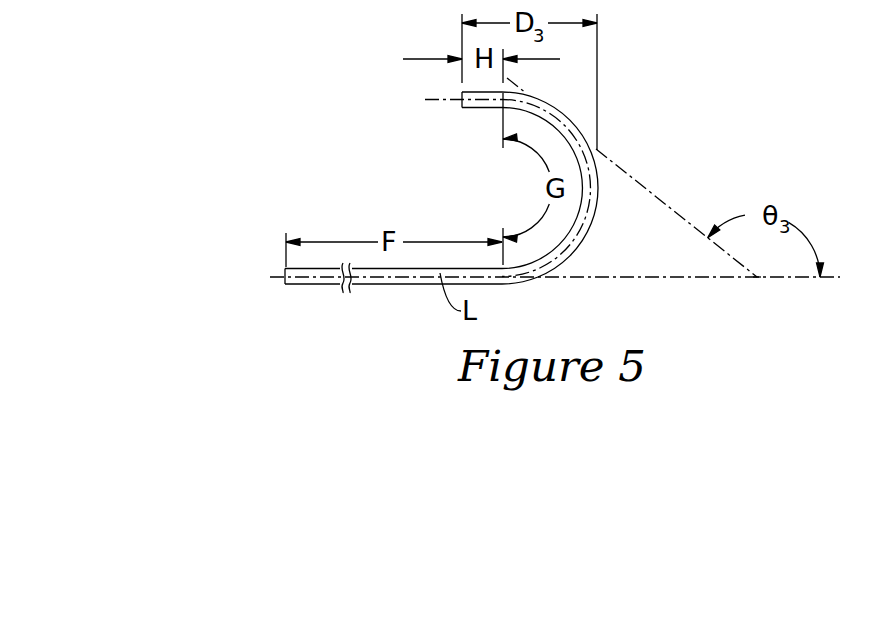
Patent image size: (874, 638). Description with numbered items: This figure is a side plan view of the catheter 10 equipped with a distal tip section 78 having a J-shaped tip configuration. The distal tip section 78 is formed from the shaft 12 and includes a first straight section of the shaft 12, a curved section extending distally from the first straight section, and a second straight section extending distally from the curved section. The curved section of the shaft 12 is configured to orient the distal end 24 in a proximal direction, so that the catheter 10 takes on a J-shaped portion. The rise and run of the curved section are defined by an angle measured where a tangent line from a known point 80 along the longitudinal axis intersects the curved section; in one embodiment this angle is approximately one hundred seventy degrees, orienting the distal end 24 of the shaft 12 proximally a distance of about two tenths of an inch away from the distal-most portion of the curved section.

The catheter 10 is at (423, 179).
The shaft 12 is at (373, 285).
The distal end 24 is at (462, 104).
The distal tip section 78 is at (383, 103).
The known point 80 is at (757, 278).